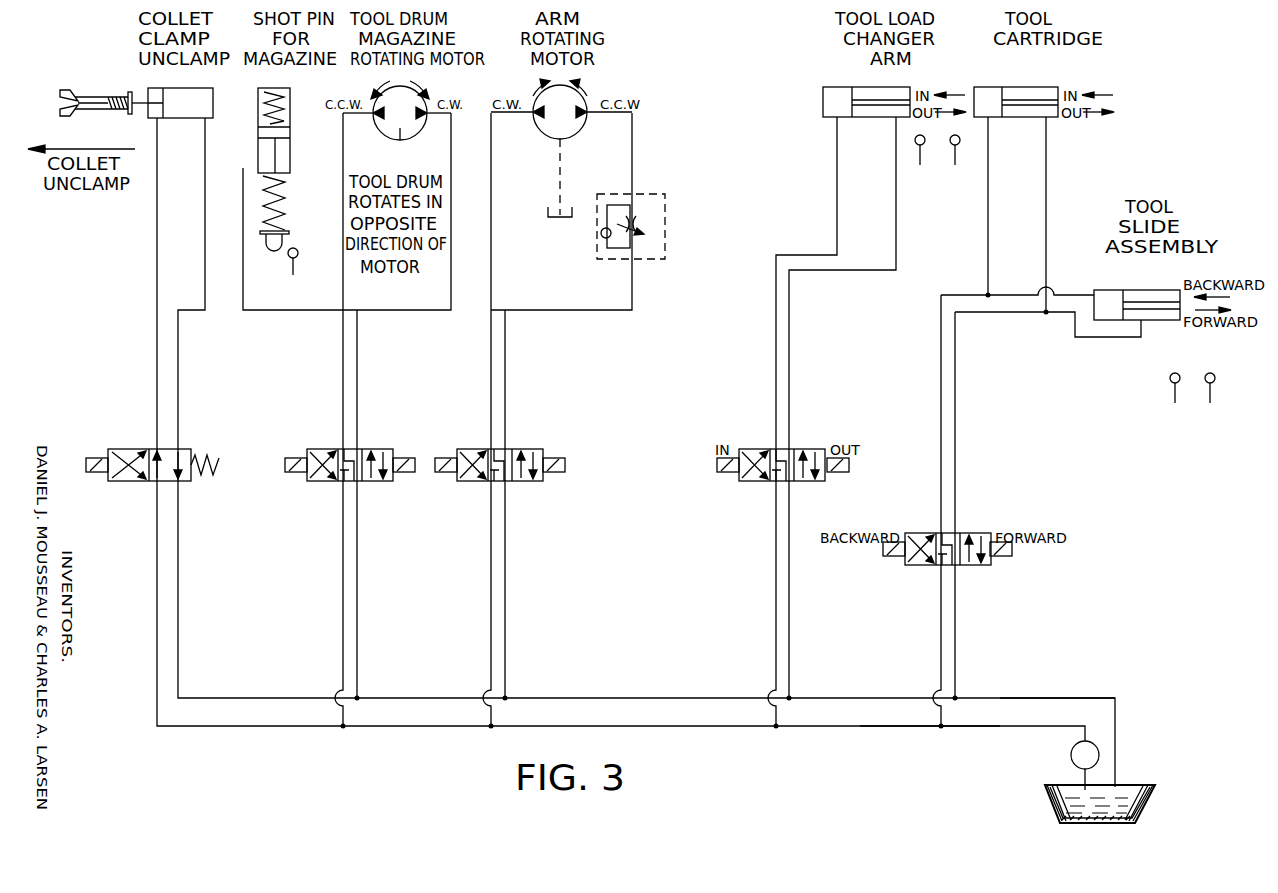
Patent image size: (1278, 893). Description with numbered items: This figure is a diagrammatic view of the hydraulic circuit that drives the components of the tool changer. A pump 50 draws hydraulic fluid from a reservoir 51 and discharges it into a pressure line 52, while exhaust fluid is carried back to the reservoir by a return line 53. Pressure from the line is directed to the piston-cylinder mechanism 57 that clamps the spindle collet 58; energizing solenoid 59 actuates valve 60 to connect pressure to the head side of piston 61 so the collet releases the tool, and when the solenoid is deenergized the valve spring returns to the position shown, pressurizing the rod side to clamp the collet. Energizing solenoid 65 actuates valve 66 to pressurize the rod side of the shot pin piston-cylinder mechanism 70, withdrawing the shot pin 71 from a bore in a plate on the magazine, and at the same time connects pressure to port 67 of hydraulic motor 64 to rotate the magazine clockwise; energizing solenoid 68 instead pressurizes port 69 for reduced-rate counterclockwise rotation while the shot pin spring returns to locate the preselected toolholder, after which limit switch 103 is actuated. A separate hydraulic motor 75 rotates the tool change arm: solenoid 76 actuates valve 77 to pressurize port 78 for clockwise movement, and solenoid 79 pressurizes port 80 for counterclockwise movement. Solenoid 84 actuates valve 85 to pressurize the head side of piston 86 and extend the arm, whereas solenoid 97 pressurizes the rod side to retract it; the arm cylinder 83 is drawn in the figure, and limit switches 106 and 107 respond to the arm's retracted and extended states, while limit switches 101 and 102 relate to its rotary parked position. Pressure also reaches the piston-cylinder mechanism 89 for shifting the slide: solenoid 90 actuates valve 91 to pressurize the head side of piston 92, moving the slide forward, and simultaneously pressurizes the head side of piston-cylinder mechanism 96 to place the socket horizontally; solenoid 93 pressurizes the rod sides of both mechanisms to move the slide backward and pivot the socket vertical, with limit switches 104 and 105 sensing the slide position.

The pump 50 is at (1071, 755).
The reservoir 51 is at (1130, 805).
The pressure line 52 is at (912, 728).
The return line 53 is at (1040, 697).
The piston-cylinder mechanism 57 is at (186, 121).
The spindle collet 58 is at (77, 93).
The solenoid 59 is at (95, 456).
The valve 60 is at (148, 483).
The piston 61 is at (198, 96).
The hydraulic motor 64 is at (400, 140).
The solenoid 65 is at (408, 474).
The valve 66 is at (356, 455).
The port 67 is at (375, 120).
The solenoid 68 is at (292, 475).
The port 69 is at (423, 120).
The shot pin piston-cylinder mechanism 70 is at (282, 118).
The shot pin 71 is at (273, 246).
The hydraulic motor 75 is at (563, 128).
The solenoid 76 is at (560, 474).
The valve 77 is at (510, 455).
The port 78 is at (538, 132).
The solenoid 79 is at (448, 456).
The port 80 is at (594, 82).
The tool load changer arm cylinder 83 is at (872, 88).
The solenoid 84 is at (842, 474).
The valve 85 is at (796, 455).
The piston 86 is at (833, 113).
The piston-cylinder mechanism 89 is at (1136, 290).
The solenoid 90 is at (1008, 558).
The valve 91 is at (958, 538).
The piston 92 is at (1112, 295).
The solenoid 93 is at (893, 558).
The piston-cylinder mechanism 96 is at (1015, 90).
The solenoid 97 is at (722, 474).
The limit switch 101 is at (509, 135).
The limit switch 102 is at (609, 135).
The limit switch 103 is at (293, 281).
The limit switch 104 is at (1174, 411).
The limit switch 105 is at (1212, 411).
The limit switch 106 is at (920, 170).
The limit switch 107 is at (959, 170).